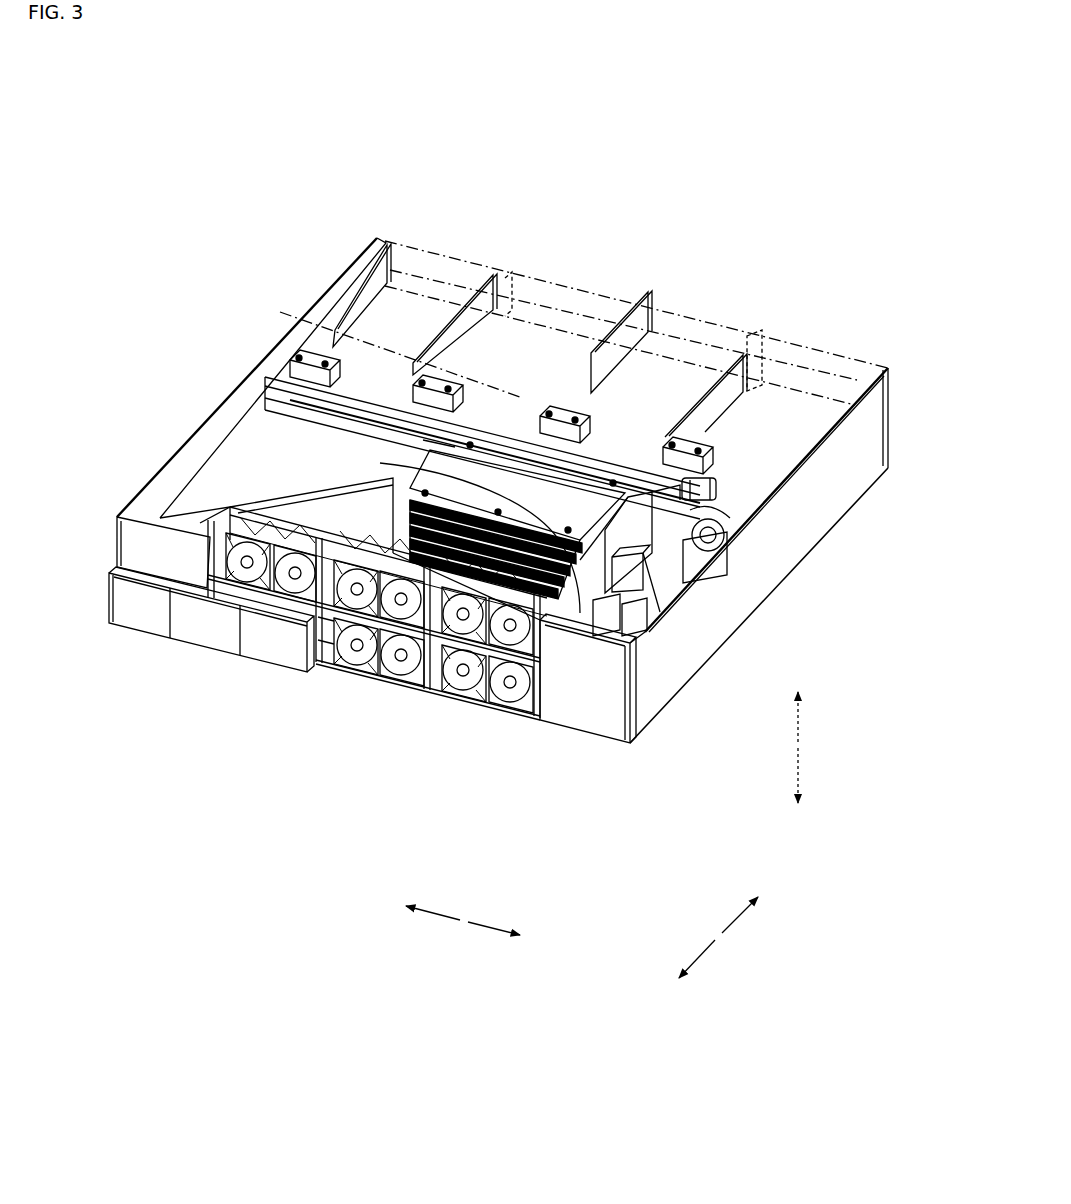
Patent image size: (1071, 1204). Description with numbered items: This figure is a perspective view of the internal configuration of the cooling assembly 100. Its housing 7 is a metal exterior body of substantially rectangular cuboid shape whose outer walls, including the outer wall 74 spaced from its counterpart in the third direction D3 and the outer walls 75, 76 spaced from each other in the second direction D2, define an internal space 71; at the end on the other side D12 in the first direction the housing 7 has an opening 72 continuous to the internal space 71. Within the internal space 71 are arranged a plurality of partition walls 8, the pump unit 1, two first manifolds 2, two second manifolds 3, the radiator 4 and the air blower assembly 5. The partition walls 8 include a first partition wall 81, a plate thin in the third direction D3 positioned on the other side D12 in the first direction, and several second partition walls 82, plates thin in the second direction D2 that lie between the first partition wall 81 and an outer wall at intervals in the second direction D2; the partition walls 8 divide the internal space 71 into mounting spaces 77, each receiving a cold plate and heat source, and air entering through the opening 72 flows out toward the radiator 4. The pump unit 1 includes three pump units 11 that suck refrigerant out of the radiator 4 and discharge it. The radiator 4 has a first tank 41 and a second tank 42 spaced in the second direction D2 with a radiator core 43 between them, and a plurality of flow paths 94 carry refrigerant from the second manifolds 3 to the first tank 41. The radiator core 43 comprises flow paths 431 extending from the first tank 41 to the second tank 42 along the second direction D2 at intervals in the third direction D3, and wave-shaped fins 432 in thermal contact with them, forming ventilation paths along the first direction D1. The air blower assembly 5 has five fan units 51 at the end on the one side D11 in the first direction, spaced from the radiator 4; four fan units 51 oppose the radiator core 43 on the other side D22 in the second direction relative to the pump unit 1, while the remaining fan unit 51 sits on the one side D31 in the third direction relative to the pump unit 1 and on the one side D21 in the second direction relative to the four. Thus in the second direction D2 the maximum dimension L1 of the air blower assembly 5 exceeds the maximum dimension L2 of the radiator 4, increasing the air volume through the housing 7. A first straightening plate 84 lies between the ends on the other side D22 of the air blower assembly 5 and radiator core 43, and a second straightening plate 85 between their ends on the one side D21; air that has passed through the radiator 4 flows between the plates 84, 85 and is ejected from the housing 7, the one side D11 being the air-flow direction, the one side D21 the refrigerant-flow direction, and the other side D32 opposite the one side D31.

The cooling assembly 100 is at (612, 176).
The pump unit 1 is at (262, 742).
The pump unit 11 is at (145, 635).
The first manifold 2 is at (620, 520).
The second manifold 3 is at (280, 373).
The radiator 4 is at (525, 874).
The first tank 41 is at (672, 503).
The second tank 42 is at (657, 553).
The radiator core 43 is at (490, 837).
The flow path 431 is at (545, 555).
The fin 432 is at (517, 565).
The air blower assembly 5 is at (475, 829).
The fan unit 51 is at (247, 566).
The housing 7 is at (640, 160).
The internal space 71 is at (678, 348).
The opening 72 is at (738, 330).
The outer wall 74 is at (887, 478).
The outer wall 75 is at (358, 248).
The outer wall 76 is at (850, 430).
The mounting space 77 is at (530, 348).
The partition wall 8 is at (920, 488).
The first partition wall 81 is at (727, 397).
The second partition wall 82 is at (690, 470).
The first straightening plate 84 is at (387, 441).
The second straightening plate 85 is at (290, 513).
The flow path 94 is at (700, 560).
The maximum dimension of the air blower assembly L1 is at (384, 569).
The maximum dimension of the radiator L2 is at (526, 459).
The first direction D1 is at (670, 1034).
The one side in the first direction D11 is at (708, 958).
The other side in the first direction D12 is at (744, 914).
The second direction D2 is at (515, 992).
The one side in the second direction D21 is at (432, 908).
The other side in the second direction D22 is at (490, 922).
The third direction D3 is at (888, 700).
The one side in the third direction D31 is at (800, 722).
The other side in the third direction D32 is at (800, 778).